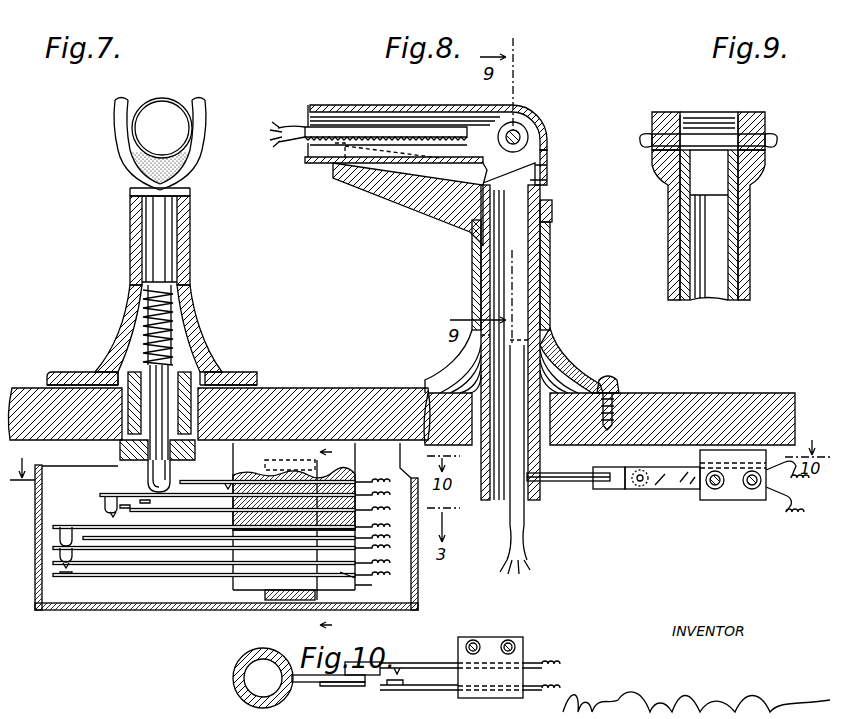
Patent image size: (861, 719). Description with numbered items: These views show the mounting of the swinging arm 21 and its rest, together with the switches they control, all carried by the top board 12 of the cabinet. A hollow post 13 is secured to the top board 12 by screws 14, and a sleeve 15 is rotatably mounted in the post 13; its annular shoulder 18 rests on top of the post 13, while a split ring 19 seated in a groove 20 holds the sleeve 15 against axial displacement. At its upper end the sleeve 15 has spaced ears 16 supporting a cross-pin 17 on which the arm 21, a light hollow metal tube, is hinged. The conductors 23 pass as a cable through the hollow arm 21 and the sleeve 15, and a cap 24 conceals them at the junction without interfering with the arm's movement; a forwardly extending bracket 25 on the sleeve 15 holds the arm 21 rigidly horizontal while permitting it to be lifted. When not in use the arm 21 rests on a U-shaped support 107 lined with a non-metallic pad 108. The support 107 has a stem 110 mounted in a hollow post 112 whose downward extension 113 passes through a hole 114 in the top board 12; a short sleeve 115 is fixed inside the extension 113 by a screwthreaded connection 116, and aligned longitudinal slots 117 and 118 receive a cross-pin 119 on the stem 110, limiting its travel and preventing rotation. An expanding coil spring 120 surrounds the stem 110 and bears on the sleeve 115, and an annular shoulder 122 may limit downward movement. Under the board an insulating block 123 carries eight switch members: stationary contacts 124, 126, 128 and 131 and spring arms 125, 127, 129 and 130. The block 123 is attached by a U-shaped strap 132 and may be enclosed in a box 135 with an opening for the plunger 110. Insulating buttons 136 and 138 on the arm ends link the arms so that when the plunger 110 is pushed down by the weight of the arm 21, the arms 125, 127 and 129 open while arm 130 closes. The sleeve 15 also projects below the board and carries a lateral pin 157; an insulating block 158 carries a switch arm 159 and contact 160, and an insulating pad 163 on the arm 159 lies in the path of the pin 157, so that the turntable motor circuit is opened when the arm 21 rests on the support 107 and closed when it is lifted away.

In FIG. 7, the top board 12 is at (318, 394).
In FIG. 8, the top board 12 is at (696, 393).
In FIG. 8, the hollow post 13 is at (472, 240).
In FIG. 9, the hollow post 13 is at (750, 240).
In FIG. 8, the screws 14 is at (610, 376).
In FIG. 8, the sleeve 15 is at (548, 268).
In FIG. 9, the sleeve 15 is at (710, 306).
In FIG. 10, the sleeve 15 is at (250, 660).
In FIG. 8, the ears 16 is at (466, 110).
In FIG. 9, the ears 16 is at (660, 112).
In FIG. 8, the cross-pin 17 is at (518, 130).
In FIG. 9, the cross-pin 17 is at (710, 128).
In FIG. 8, the annular shoulder 18 is at (552, 214).
In FIG. 9, the annular shoulder 18 is at (750, 213).
In FIG. 8, the split ring 19 is at (555, 328).
In FIG. 8, the groove 20 is at (560, 342).
In FIG. 7, the arm 21 is at (165, 98).
In FIG. 8, the arm 21 is at (352, 92).
In FIG. 9, the arm 21 is at (698, 112).
In FIG. 8, the conductors 23 is at (298, 142).
In FIG. 8, the cap 24 is at (545, 174).
In FIG. 9, the cap 24 is at (690, 182).
In FIG. 8, the bracket 25 is at (400, 188).
In FIG. 7, the support 107 is at (201, 156).
In FIG. 7, the non-metallic pad 108 is at (135, 165).
In FIG. 7, the stem 110 is at (150, 218).
In FIG. 7, the hollow post 112 is at (190, 222).
In FIG. 7, the downward extension 113 is at (190, 462).
In FIG. 7, the hole 114 is at (92, 375).
In FIG. 7, the short sleeve 115 is at (172, 335).
In FIG. 7, the screwthreaded connection 116 is at (138, 460).
In FIG. 7, the longitudinal slot 117 is at (95, 376).
In FIG. 7, the longitudinal slot 118 is at (133, 372).
In FIG. 7, the cross-pin 119 is at (225, 378).
In FIG. 7, the expanding coil spring 120 is at (180, 312).
In FIG. 7, the annular shoulder 122 is at (190, 190).
In FIG. 7, the insulating block 123 is at (357, 580).
In FIG. 7, the stationary contact 124 is at (228, 470).
In FIG. 7, the switch arm 125 is at (183, 484).
In FIG. 7, the stationary contact 126 is at (168, 497).
In FIG. 7, the switch arm 127 is at (150, 512).
In FIG. 7, the stationary contact 128 is at (128, 529).
In FIG. 7, the switch arm 129 is at (117, 540).
In FIG. 7, the switch arm 130 is at (95, 550).
In FIG. 7, the stationary contact 131 is at (104, 512).
In FIG. 7, the U-shaped strap 132 is at (285, 600).
In FIG. 7, the box 135 is at (418, 576).
In FIG. 7, the insulating button 136 is at (108, 499).
In FIG. 7, the insulating button 138 is at (60, 550).
In FIG. 8, the lateral pin 157 is at (553, 483).
In FIG. 10, the lateral pin 157 is at (318, 684).
In FIG. 8, the insulating block 158 is at (735, 498).
In FIG. 10, the insulating block 158 is at (485, 640).
In FIG. 10, the switch member 159 is at (420, 647).
In FIG. 8, the contact 160 is at (667, 486).
In FIG. 10, the contact 160 is at (442, 690).
In FIG. 8, the insulating pad 163 is at (612, 489).
In FIG. 10, the insulating pad 163 is at (352, 665).